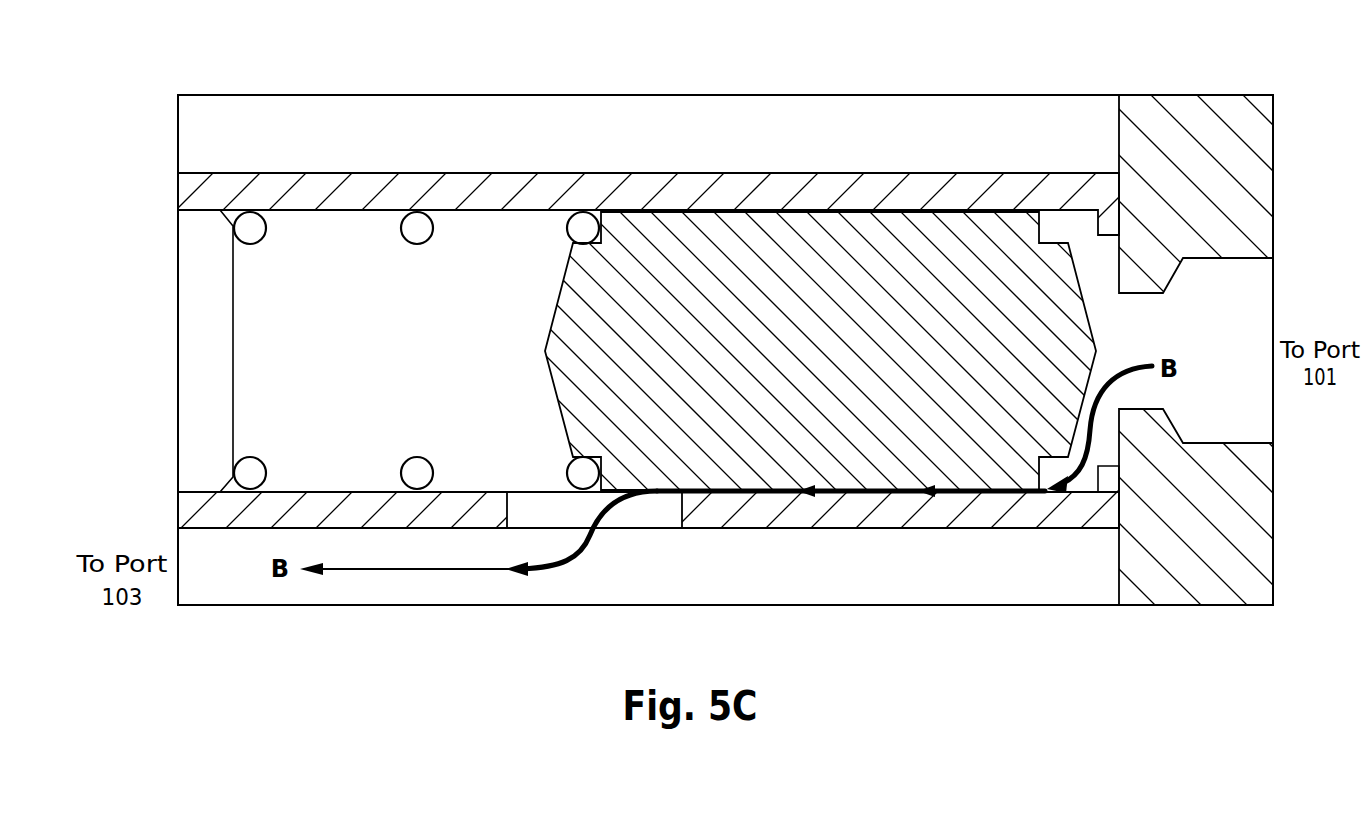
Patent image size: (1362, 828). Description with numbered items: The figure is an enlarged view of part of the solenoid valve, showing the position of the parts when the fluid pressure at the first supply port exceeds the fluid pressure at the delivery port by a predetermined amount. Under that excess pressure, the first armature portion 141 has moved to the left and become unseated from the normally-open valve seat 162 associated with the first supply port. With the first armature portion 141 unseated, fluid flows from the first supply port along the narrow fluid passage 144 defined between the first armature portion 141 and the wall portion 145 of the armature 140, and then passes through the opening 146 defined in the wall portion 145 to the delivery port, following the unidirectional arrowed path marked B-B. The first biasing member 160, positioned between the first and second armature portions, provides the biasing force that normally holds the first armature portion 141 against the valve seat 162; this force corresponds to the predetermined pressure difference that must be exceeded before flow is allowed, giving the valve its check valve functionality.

The armature 140 is at (1014, 165).
The first armature portion 141 is at (783, 233).
The narrow fluid passage 144 is at (858, 492).
The wall portion 145 is at (762, 492).
The opening 146 is at (681, 508).
The first biasing member 160 is at (418, 228).
The normally-open valve seat 162 is at (1118, 445).